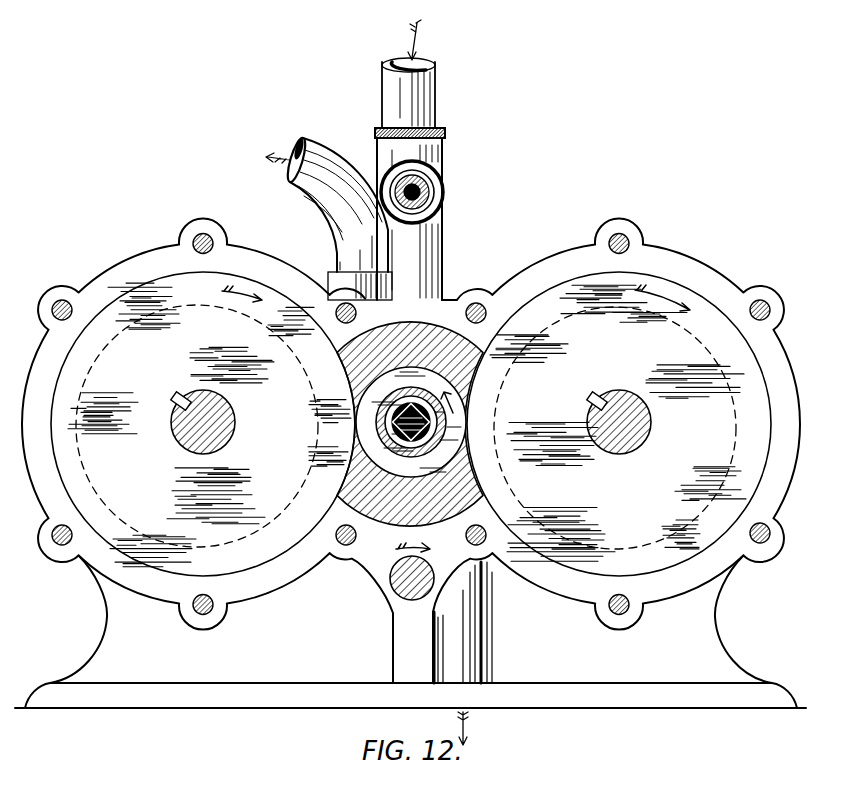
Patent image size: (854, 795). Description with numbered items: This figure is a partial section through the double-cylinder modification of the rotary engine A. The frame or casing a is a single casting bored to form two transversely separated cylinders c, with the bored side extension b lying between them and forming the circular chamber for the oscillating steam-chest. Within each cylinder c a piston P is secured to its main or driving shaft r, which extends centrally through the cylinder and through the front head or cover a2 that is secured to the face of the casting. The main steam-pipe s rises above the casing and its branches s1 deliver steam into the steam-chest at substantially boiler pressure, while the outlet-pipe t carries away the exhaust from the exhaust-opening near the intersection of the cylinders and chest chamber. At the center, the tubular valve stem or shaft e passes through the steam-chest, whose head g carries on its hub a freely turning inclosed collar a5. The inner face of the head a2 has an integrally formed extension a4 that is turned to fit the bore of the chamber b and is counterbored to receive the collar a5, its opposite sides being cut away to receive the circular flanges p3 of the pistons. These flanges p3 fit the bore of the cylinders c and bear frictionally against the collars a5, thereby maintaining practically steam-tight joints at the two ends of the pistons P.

The rotary engine A is at (411, 423).
The cylinder c is at (121, 276).
The piston P is at (185, 325).
The circular flanges p3 is at (268, 295).
The front head or cover a2 is at (55, 352).
The side wings or extensions b is at (437, 298).
The frame or casing a is at (113, 620).
The extensions of the heads a4 is at (367, 357).
The inclosed collars a5 is at (378, 395).
The tubular valve stem or shaft e is at (390, 425).
The head of the steam-chest g is at (446, 424).
The main or driving shaft r is at (194, 398).
The main steam-pipe s is at (436, 103).
The branches of the steam-pipe s1 is at (433, 232).
The outlet-pipe t is at (326, 201).